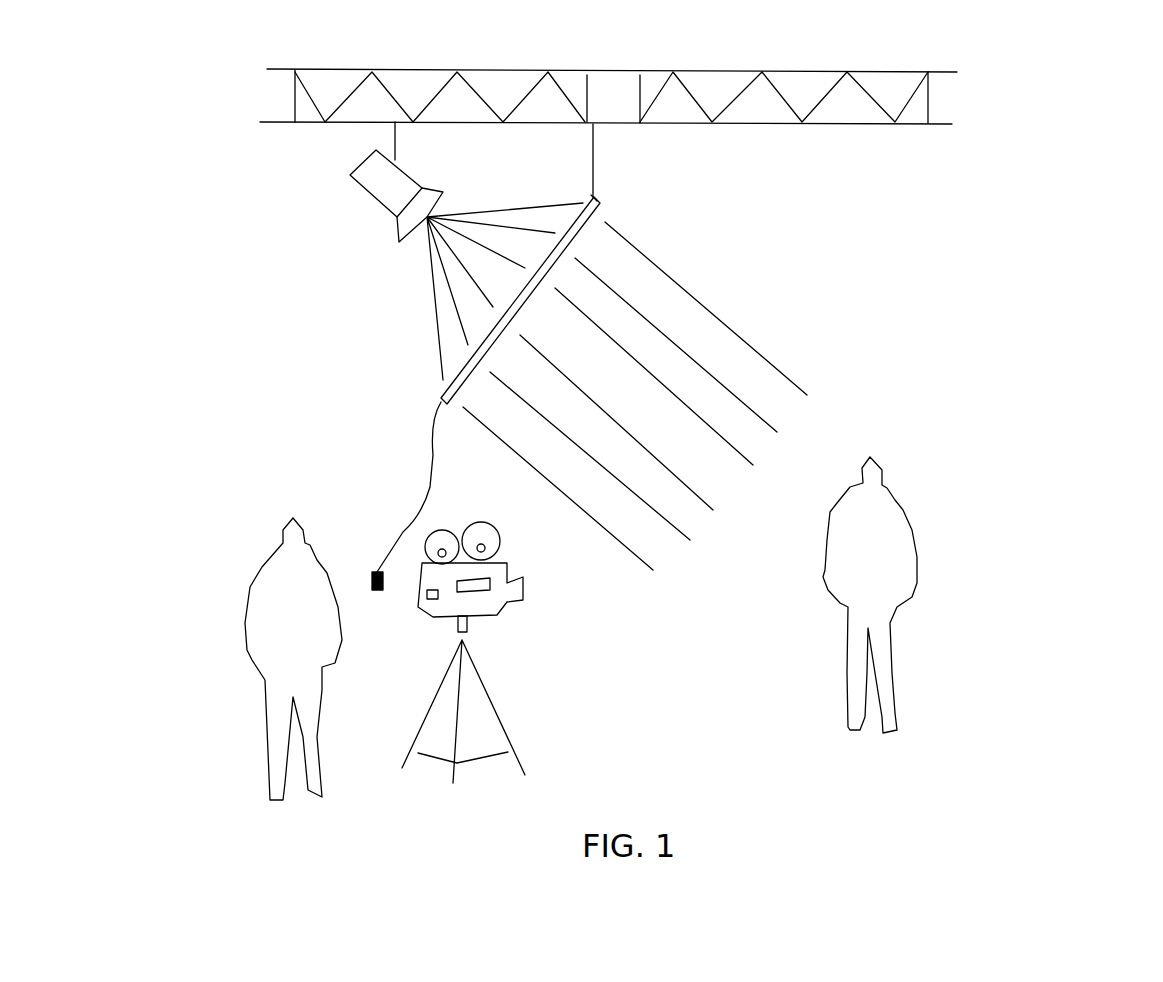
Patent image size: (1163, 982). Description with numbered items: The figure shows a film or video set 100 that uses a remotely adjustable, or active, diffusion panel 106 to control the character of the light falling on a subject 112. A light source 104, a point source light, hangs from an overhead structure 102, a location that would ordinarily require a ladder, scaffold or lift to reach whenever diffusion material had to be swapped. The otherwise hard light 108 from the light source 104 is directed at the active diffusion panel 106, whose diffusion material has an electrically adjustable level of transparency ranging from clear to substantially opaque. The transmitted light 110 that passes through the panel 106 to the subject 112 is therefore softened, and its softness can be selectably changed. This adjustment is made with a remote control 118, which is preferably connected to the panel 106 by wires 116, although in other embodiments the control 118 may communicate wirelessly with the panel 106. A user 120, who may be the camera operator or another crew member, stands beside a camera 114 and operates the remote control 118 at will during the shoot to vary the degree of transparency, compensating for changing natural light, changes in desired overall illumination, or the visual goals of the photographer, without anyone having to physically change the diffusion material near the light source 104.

The film or video set 100 is at (1064, 153).
The overhead structure 102 is at (757, 127).
The light source 104 is at (410, 177).
The active diffusion panel 106 is at (600, 200).
The hard light 108 is at (500, 210).
The transmitted light 110 is at (658, 260).
The subject 112 is at (912, 533).
The camera 114 is at (492, 615).
The wires 116 is at (422, 500).
The remote control 118 is at (370, 570).
The user 120 is at (248, 582).